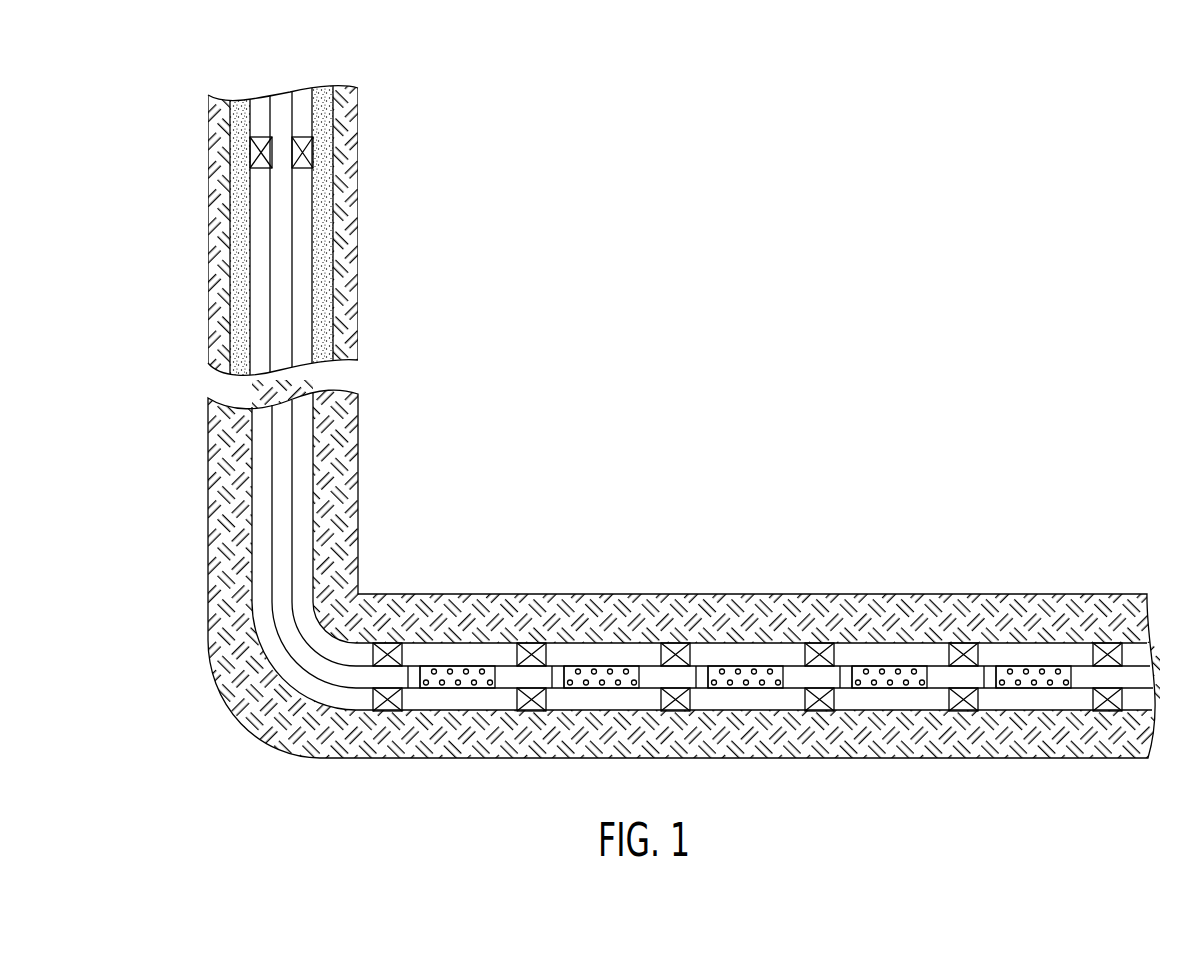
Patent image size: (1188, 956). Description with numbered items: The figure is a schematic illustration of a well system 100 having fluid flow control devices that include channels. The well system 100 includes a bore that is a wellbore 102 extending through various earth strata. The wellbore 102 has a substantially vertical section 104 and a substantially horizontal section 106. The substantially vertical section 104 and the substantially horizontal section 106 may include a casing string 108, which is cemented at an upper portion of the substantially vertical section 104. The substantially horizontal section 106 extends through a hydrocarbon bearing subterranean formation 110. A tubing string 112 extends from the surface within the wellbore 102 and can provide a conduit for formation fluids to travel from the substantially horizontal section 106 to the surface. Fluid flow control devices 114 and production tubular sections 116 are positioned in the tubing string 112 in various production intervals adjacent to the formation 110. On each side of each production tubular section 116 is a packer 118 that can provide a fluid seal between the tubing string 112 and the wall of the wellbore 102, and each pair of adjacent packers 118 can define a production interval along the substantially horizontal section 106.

The well system 100 is at (180, 128).
The wellbore 102 is at (313, 493).
The substantially vertical section 104 is at (313, 430).
The substantially horizontal section 106 is at (647, 642).
The casing string 108 is at (320, 245).
The hydrocarbon bearing subterranean formation 110 is at (790, 477).
The tubing string 112 is at (292, 540).
The fluid flow control device 114 is at (417, 668).
The production tubular section 116 is at (458, 678).
The packer 118 is at (532, 650).